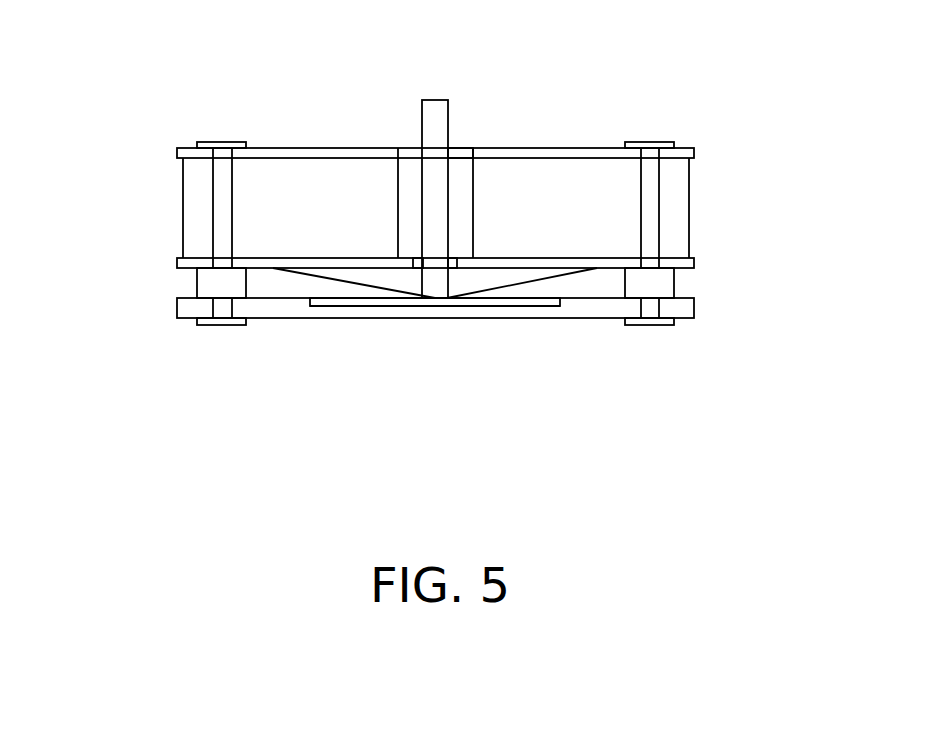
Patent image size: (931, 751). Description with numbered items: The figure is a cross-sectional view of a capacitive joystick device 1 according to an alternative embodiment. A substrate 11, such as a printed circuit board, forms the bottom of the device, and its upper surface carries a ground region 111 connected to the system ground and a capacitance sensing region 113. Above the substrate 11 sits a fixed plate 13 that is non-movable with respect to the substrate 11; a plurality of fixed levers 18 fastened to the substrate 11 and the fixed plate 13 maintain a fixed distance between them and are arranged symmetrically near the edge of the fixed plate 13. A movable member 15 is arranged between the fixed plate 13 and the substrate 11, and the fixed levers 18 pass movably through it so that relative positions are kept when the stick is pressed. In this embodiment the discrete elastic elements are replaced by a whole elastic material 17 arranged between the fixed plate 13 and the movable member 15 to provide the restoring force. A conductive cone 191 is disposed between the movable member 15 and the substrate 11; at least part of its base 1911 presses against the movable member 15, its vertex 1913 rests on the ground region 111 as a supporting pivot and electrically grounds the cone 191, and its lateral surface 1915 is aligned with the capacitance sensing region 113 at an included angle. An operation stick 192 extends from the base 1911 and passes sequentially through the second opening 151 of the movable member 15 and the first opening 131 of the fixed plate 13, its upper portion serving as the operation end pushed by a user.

The capacitive joystick device 1 is at (777, 43).
The substrate 11 is at (183, 308).
The ground region 111 is at (450, 302).
The capacitance sensing region 113 is at (372, 302).
The fixed plate 13 is at (182, 153).
The first opening 131 is at (462, 152).
The movable member 15 is at (178, 262).
The second opening 151 is at (420, 256).
The elastic material 17 is at (193, 177).
The fixed lever 18 is at (222, 224).
The cone 191 is at (454, 344).
The base 1911 is at (323, 277).
The vertex 1913 is at (433, 299).
The lateral surface 1915 is at (543, 279).
The operation stick 192 is at (438, 110).